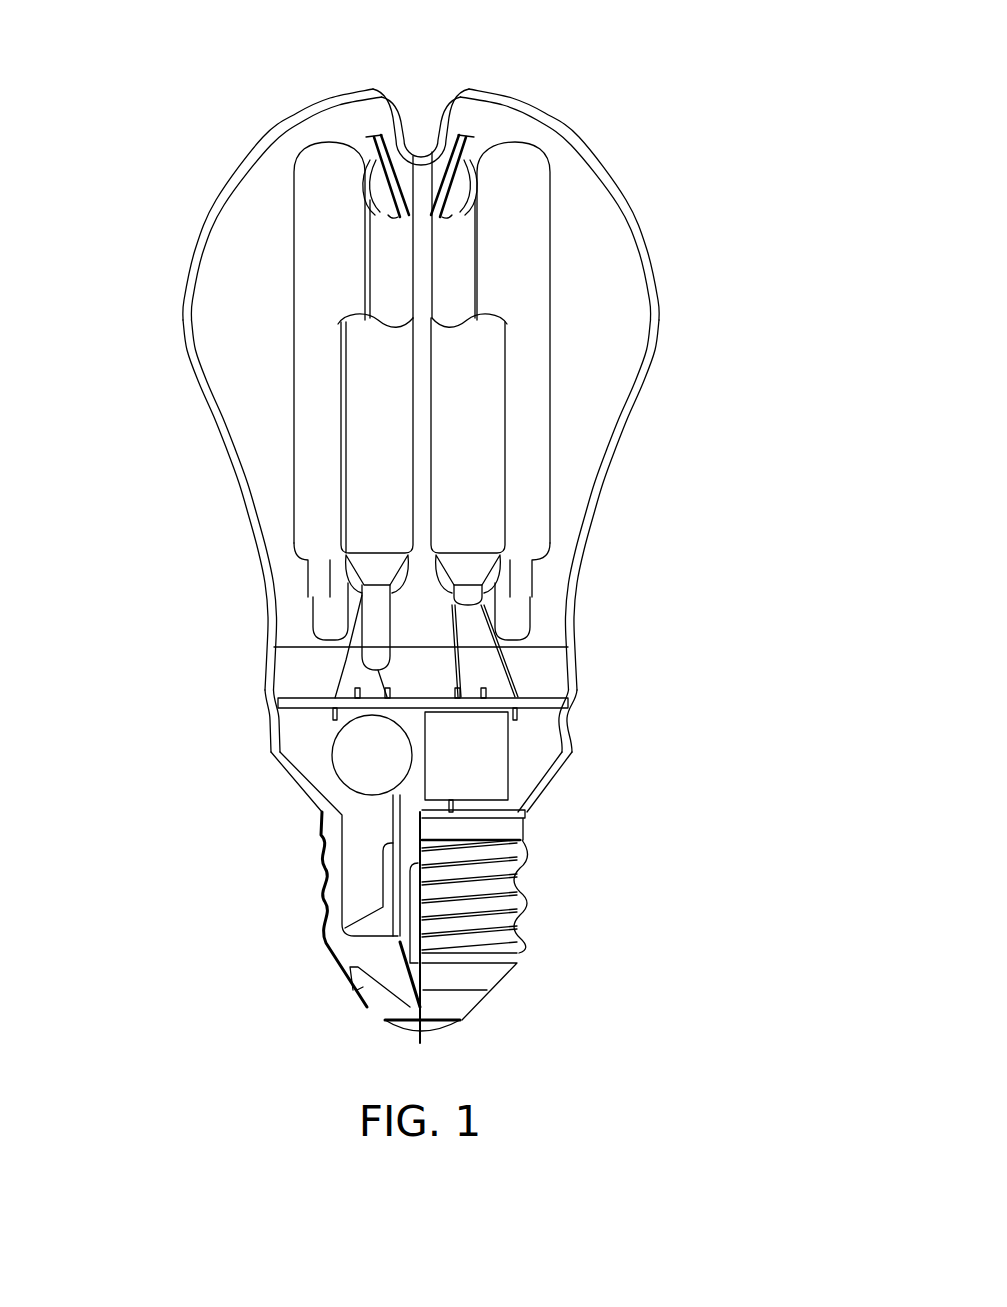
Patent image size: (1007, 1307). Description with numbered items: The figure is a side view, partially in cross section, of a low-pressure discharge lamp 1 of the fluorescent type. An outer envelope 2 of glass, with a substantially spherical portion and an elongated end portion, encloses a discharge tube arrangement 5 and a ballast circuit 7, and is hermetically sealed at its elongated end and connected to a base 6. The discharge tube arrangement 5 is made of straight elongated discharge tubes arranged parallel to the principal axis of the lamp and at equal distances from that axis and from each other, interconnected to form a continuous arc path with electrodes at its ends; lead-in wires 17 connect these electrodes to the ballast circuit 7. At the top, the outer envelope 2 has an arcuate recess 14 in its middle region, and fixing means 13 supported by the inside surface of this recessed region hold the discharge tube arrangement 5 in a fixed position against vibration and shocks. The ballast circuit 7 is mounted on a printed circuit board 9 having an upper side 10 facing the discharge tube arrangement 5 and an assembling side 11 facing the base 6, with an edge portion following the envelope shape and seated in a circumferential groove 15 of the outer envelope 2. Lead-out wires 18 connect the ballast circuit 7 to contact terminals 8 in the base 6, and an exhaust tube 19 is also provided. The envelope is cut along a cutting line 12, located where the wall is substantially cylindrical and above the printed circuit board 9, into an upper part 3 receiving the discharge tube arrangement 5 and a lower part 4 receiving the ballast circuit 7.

The low-pressure discharge lamp 1 is at (680, 440).
The outer envelope 2 is at (643, 223).
The upper part 3 is at (233, 476).
The lower part 4 is at (268, 772).
The discharge tube arrangement 5 is at (317, 182).
The base 6 is at (323, 940).
The ballast circuit 7 is at (453, 763).
The contact terminals 8 is at (430, 1035).
The printed circuit board 9 is at (557, 707).
The upper side 10 is at (535, 698).
The assembling side 11 is at (543, 713).
The cutting line 12 is at (555, 640).
The fixing means 13 is at (477, 143).
The arcuate recess 14 is at (390, 117).
The circumferential groove 15 is at (268, 716).
The lead-in wires 17 is at (340, 670).
The lead-out wires 18 is at (470, 800).
The exhaust tube 19 is at (415, 882).